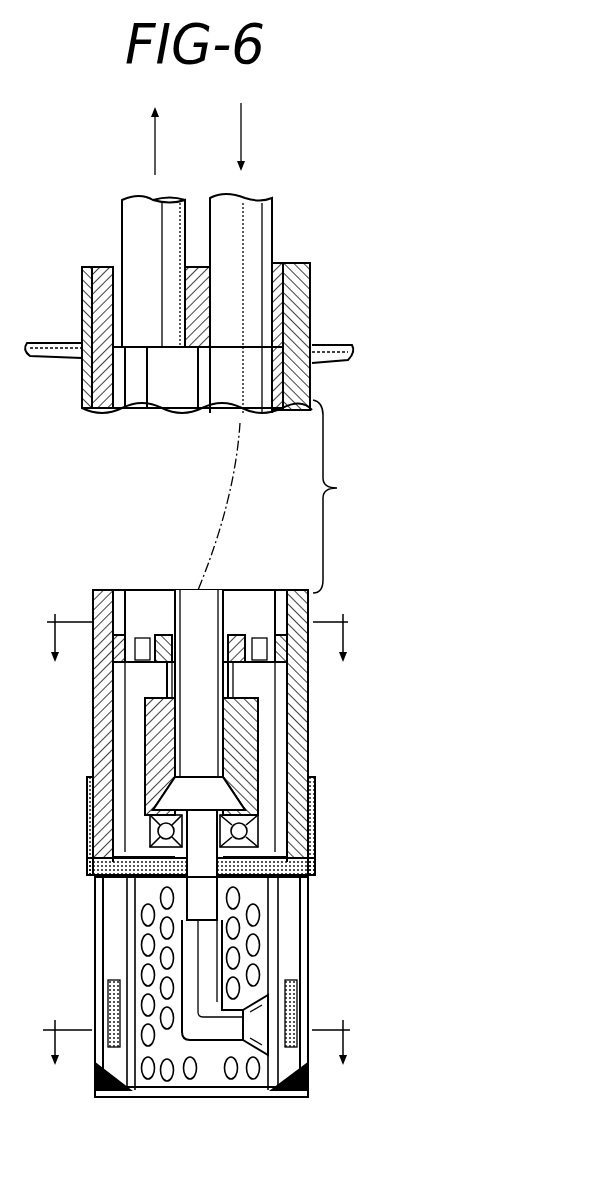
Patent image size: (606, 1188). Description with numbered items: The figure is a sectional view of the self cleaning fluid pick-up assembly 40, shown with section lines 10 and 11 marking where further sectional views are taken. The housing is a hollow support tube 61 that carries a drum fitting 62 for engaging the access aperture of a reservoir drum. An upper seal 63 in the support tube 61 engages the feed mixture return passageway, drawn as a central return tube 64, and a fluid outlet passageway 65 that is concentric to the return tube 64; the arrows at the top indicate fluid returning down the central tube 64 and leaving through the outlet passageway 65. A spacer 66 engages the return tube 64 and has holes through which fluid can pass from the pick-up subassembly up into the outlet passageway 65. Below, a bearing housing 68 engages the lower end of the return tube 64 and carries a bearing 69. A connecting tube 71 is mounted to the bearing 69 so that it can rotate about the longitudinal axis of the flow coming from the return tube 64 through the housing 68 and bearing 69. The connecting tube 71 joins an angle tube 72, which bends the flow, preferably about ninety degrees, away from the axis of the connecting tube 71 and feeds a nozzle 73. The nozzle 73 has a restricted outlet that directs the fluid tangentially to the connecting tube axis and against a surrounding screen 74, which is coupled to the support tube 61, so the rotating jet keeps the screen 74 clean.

The section line 10- 10 is at (198, 625).
The section line 11- 11 is at (201, 1033).
The pick-up assembly 40 is at (326, 331).
The hollow support tube 61 is at (297, 388).
The drum fitting 62 is at (310, 298).
The upper seal 63 is at (277, 264).
The central return tube 64 is at (265, 223).
The fluid outlet passageway 65 is at (122, 218).
The spacer 66 is at (245, 625).
The bearing housing 68 is at (243, 725).
The bearing 69 is at (250, 820).
The connecting tube 71 is at (260, 893).
The angle tube 72 is at (217, 987).
The nozzle 73 is at (253, 1057).
The screen 74 is at (100, 953).